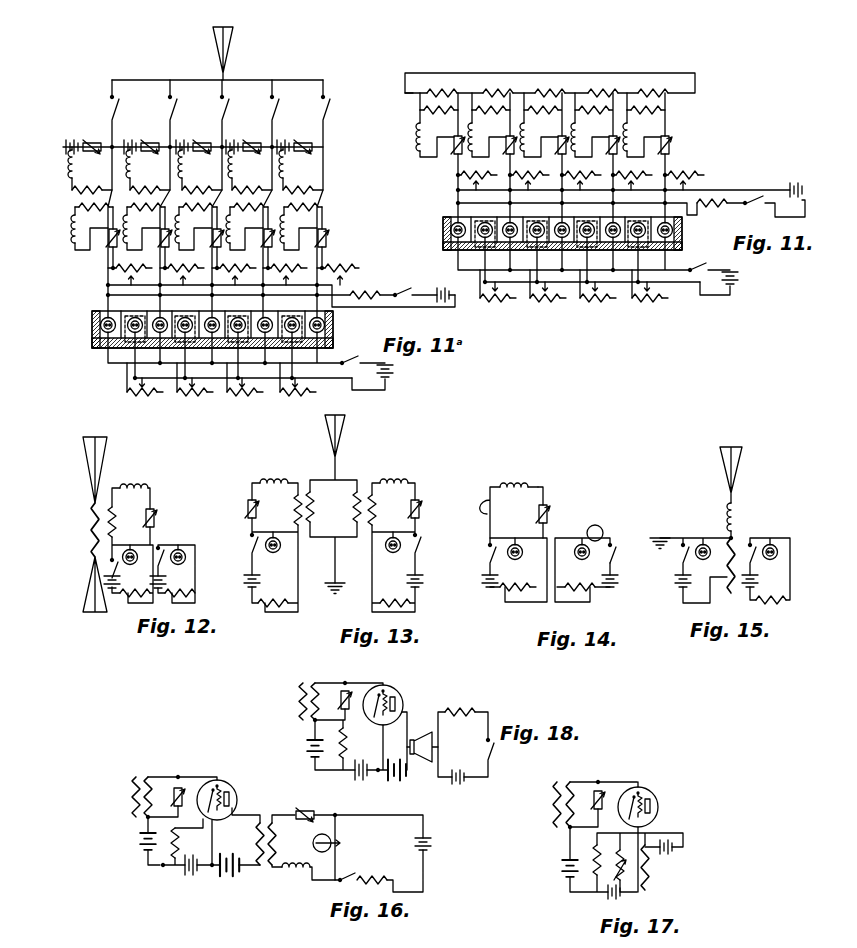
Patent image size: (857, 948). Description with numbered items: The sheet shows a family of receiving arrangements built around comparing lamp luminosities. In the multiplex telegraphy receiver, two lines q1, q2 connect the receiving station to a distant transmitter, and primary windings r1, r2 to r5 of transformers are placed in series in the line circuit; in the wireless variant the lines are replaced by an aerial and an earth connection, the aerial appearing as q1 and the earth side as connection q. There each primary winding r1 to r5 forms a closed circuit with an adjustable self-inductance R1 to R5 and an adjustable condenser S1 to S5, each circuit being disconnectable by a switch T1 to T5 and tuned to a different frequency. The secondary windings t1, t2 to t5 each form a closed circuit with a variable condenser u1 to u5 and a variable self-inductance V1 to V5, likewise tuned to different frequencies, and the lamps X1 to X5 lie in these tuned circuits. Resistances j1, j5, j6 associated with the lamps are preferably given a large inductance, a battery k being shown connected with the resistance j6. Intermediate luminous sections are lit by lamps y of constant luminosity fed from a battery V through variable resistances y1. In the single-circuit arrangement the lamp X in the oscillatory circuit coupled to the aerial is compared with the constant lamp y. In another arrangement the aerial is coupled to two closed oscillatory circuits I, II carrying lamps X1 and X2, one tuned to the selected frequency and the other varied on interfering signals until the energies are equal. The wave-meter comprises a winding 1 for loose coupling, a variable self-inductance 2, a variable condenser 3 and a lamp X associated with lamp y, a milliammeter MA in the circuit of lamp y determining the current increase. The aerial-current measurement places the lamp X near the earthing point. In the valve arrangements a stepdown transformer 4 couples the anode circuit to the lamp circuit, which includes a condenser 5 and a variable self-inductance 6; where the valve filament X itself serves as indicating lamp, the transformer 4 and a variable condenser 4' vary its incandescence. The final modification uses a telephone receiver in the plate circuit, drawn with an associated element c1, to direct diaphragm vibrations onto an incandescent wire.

In FIG. 11A, the line q1 is at (225, 39).
In FIG. 11, the line q1 is at (405, 96).
In FIG. 11A, the earth connection q is at (78, 147).
In FIG. 11, the line q2 is at (478, 75).
In FIG. 11A, the adjustable condenser S1 is at (92, 137).
In FIG. 11A, the adjustable condenser S5 is at (303, 137).
In FIG. 11A, the switch T1 is at (124, 199).
In FIG. 11A, the switch T5 is at (333, 199).
In FIG. 11A, the adjustable self-inductance R1 is at (68, 168).
In FIG. 11A, the adjustable self-inductance R5 is at (288, 165).
In FIG. 11A, the primary winding r1 is at (90, 185).
In FIG. 11, the primary winding r1 is at (440, 90).
In FIG. 11A, the primary winding r2 is at (150, 185).
In FIG. 11, the primary winding r2 is at (500, 90).
In FIG. 11, the primary winding r5 is at (656, 90).
In FIG. 11A, the secondary winding t1 is at (80, 210).
In FIG. 11, the secondary winding t1 is at (424, 113).
In FIG. 11, the secondary winding t2 is at (505, 108).
In FIG. 11A, the secondary winding t5 is at (310, 194).
In FIG. 11, the secondary winding t5 is at (665, 108).
In FIG. 11A, the variable condenser u1 is at (108, 228).
In FIG. 11, the variable condenser u1 is at (455, 137).
In FIG. 11A, the variable condenser u5 is at (331, 225).
In FIG. 11, the variable condenser u5 is at (669, 140).
In FIG. 11A, the variable self-inductance V1 is at (72, 235).
In FIG. 11, the variable self-inductance V1 is at (417, 140).
In FIG. 11A, the variable self-inductance V5 is at (272, 234).
In FIG. 11, the variable self-inductance V5 is at (631, 140).
In FIG. 11A, the battery V is at (380, 364).
In FIG. 11, the battery V is at (724, 270).
In FIG. 11A, the resistance j1 is at (118, 266).
In FIG. 11, the resistance j1 is at (468, 172).
In FIG. 11A, the resistance j5 is at (336, 266).
In FIG. 11, the resistance j5 is at (690, 172).
In FIG. 11A, the resistance j6 is at (398, 289).
In FIG. 11, the resistance j6 is at (715, 198).
In FIG. 11A, the battery k is at (440, 288).
In FIG. 11, the battery k is at (792, 190).
In FIG. 11A, the lamp X is at (362, 287).
In FIG. 12, the lamp X is at (132, 552).
In FIG. 14, the lamp X is at (518, 560).
In FIG. 15, the lamp X is at (708, 545).
In FIG. 16, the lamp X is at (333, 844).
In FIG. 17, the lamp X is at (632, 802).
In FIG. 11A, the lamp X1 is at (100, 330).
In FIG. 11, the lamp X1 is at (451, 227).
In FIG. 13, the lamp X1 is at (275, 555).
In FIG. 13, the lamp X2 is at (395, 555).
In FIG. 11, the lamp X5 is at (672, 231).
In FIG. 11A, the incandescent lamp y is at (187, 330).
In FIG. 11, the incandescent lamp y is at (508, 236).
In FIG. 12, the incandescent lamp y is at (180, 550).
In FIG. 14, the incandescent lamp y is at (585, 557).
In FIG. 15, the incandescent lamp y is at (768, 545).
In FIG. 11A, the variable resistance y1 is at (150, 396).
In FIG. 11, the variable resistance y1 is at (545, 302).
In FIG. 13, the closed oscillatory circuit I is at (273, 545).
In FIG. 13, the closed oscillatory circuit II is at (395, 545).
In FIG. 14, the winding 1 is at (484, 511).
In FIG. 18, the winding 1 is at (416, 738).
In FIG. 14, the variable self-inductance 2 is at (525, 487).
In FIG. 14, the variable condenser 3 is at (548, 522).
In FIG. 16, the stepdown transformer 4 is at (280, 844).
In FIG. 17, the stepdown transformer 4 is at (654, 867).
In FIG. 17, the variable condenser 4' is at (607, 864).
In FIG. 16, the condenser 5 is at (312, 813).
In FIG. 16, the variable self-inductance 6 is at (284, 872).
In FIG. 14, the milliammeter MA is at (603, 530).
In FIG. 18, the cell / relay c1 is at (440, 746).